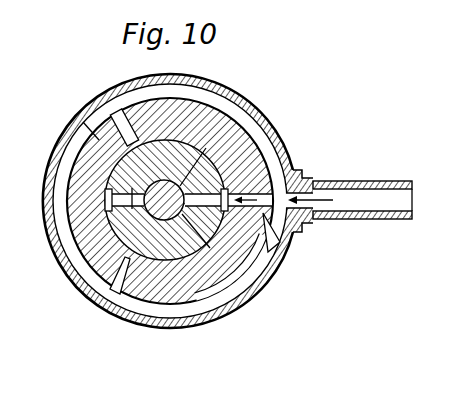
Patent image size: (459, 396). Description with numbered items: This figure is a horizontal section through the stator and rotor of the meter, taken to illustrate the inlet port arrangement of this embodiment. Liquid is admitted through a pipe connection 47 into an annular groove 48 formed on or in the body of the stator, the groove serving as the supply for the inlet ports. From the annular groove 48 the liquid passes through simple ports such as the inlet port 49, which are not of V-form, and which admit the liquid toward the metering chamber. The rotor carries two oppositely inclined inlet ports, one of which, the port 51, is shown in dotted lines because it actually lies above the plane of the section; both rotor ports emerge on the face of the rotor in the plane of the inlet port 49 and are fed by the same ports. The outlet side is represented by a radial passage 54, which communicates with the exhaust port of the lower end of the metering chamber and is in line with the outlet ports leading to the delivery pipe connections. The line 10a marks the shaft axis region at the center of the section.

The pipe connection 47 is at (357, 197).
The annular groove 48 is at (253, 132).
The inlet port 49 is at (112, 108).
The inlet port 51 is at (248, 97).
The radial passage 54 is at (77, 112).
The shaft 10a is at (176, 220).